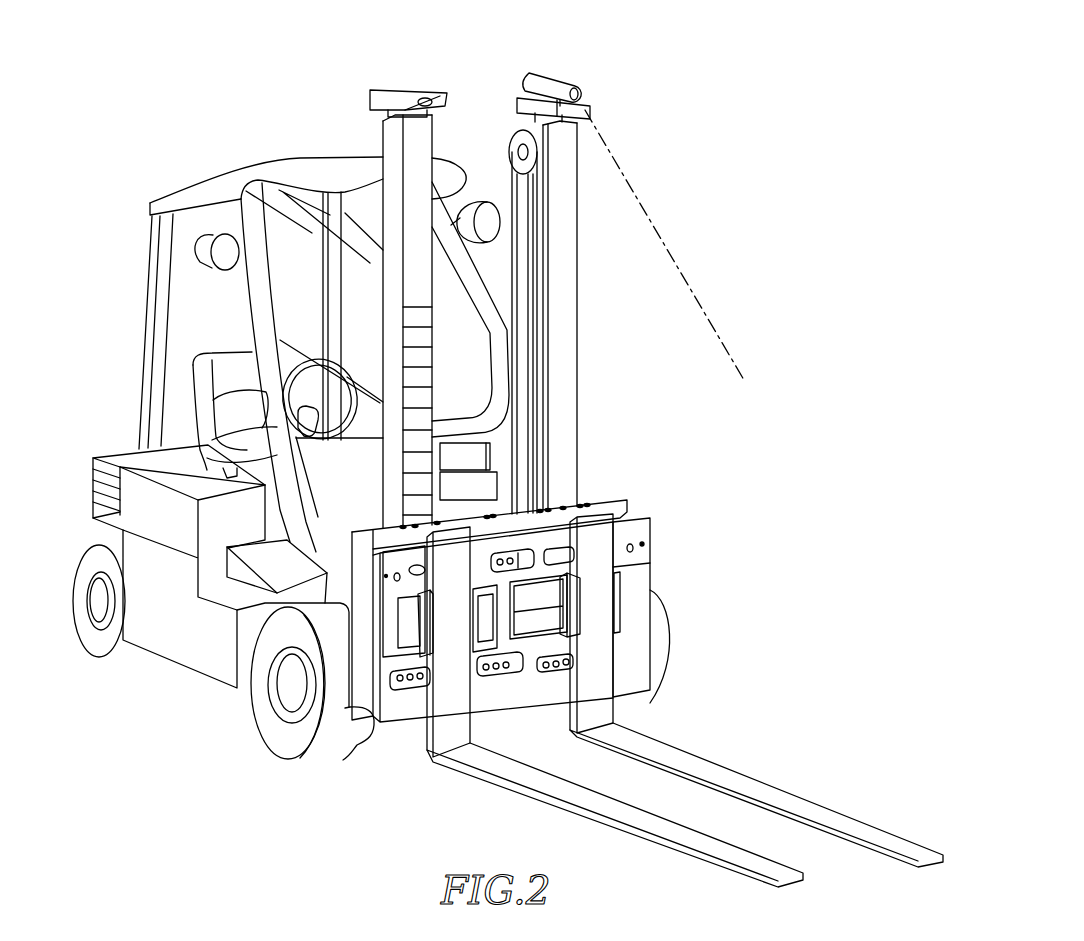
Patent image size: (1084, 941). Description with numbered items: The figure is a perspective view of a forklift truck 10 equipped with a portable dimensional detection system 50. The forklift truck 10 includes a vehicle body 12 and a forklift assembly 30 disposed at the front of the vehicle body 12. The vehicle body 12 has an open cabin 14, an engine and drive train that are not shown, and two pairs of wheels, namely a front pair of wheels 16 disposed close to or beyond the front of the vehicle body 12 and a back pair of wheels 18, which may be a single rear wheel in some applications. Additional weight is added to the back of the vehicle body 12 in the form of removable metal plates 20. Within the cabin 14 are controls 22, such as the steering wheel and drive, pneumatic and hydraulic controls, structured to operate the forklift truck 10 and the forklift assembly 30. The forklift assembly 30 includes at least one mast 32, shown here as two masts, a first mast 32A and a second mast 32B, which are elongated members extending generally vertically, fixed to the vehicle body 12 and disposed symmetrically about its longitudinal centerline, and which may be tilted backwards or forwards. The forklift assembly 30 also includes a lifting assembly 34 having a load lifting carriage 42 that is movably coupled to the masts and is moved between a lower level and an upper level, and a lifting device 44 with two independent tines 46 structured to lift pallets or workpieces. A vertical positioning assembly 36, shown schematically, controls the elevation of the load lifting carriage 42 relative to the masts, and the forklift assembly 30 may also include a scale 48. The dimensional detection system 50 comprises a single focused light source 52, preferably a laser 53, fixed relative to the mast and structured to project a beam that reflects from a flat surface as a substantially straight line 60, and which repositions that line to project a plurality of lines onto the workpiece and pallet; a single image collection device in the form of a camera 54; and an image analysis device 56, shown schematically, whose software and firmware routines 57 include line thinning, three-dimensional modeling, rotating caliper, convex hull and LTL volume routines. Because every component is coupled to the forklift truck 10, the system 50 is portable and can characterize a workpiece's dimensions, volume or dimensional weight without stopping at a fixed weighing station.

The forklift truck 10 is at (222, 106).
The vehicle body 12 is at (148, 508).
The open cabin 14 is at (138, 220).
The front pair of wheels 16 is at (273, 727).
The back pair of wheels 18 is at (102, 640).
The removable metal plates 20 is at (93, 445).
The controls 22 is at (283, 345).
The forklift assembly 30 is at (644, 472).
The mast 32 is at (566, 293).
The first mast 32A is at (566, 327).
The second mast 32B is at (432, 130).
The lifting assembly 34 is at (512, 143).
The vertical positioning assembly 36 is at (468, 487).
The load lifting carriage 42 is at (352, 705).
The lifting device 44 is at (518, 775).
The tines 46 is at (680, 752).
The scale 48 is at (705, 497).
The dimensional detection system 50 is at (692, 104).
The focused light source 52 is at (520, 100).
The laser 53 is at (560, 82).
The camera 54 is at (400, 92).
The image analysis device 56 is at (465, 457).
The routines 57 is at (492, 453).
The straight line 60 is at (697, 300).